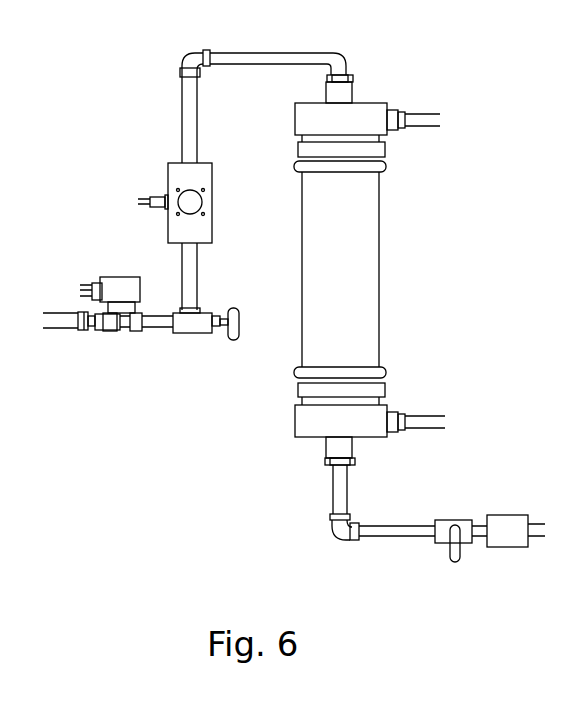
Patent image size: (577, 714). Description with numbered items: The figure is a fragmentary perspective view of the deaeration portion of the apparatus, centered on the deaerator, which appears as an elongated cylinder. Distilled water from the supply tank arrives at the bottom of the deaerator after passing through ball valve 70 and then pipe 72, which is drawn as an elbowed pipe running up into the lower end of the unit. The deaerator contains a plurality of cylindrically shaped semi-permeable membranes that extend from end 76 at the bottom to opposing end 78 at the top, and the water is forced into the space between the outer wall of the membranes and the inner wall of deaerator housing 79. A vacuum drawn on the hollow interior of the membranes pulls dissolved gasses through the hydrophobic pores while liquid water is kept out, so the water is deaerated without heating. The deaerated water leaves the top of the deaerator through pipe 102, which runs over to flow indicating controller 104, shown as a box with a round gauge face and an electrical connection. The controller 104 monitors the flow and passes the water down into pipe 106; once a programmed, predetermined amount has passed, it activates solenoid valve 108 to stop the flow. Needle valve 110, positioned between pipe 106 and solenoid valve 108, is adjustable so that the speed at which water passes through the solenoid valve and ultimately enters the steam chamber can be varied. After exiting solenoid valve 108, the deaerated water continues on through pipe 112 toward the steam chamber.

The ball valve 70 is at (444, 555).
The pipe 72 is at (338, 503).
The end 76 is at (318, 418).
The opposing end 78 is at (355, 113).
The deaerator housing 79 is at (348, 293).
The pipe 102 is at (268, 61).
The flow indicating controller 104 is at (218, 218).
The pipe 106 is at (196, 278).
The solenoid valve 108 is at (107, 262).
The needle valve 110 is at (197, 335).
The pipe 112 is at (58, 327).